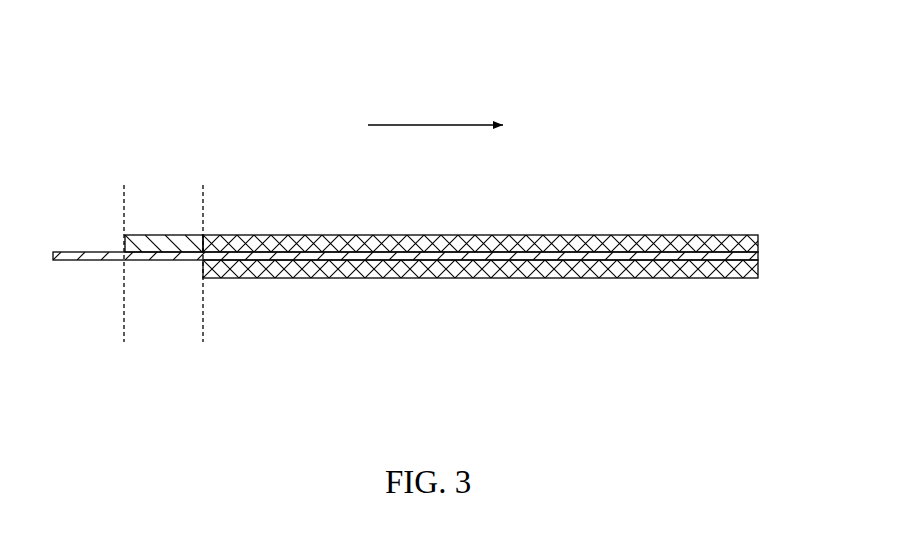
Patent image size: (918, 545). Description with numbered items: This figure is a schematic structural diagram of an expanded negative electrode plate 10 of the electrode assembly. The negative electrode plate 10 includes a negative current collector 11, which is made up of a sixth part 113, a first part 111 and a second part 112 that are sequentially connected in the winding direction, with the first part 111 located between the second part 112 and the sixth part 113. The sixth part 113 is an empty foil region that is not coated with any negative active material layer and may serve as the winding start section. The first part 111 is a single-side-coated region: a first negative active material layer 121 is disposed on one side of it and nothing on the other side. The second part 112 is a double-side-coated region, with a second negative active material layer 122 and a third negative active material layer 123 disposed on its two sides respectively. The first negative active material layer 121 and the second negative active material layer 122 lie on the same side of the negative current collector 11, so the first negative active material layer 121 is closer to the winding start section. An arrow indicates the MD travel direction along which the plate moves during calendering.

The negative electrode plate 10 is at (418, 55).
The negative current collector 11 is at (760, 253).
The first part 111 is at (148, 262).
The second part 112 is at (460, 258).
The sixth part 113 is at (80, 262).
The first negative active material layer 121 is at (168, 233).
The second negative active material layer 122 is at (481, 233).
The third negative active material layer 123 is at (582, 280).